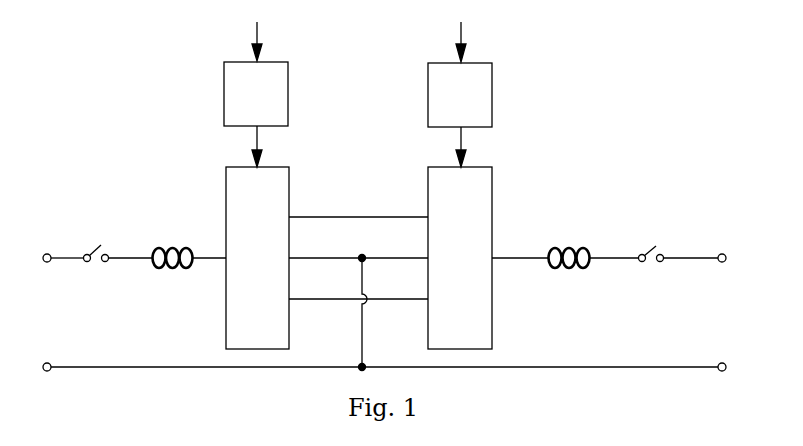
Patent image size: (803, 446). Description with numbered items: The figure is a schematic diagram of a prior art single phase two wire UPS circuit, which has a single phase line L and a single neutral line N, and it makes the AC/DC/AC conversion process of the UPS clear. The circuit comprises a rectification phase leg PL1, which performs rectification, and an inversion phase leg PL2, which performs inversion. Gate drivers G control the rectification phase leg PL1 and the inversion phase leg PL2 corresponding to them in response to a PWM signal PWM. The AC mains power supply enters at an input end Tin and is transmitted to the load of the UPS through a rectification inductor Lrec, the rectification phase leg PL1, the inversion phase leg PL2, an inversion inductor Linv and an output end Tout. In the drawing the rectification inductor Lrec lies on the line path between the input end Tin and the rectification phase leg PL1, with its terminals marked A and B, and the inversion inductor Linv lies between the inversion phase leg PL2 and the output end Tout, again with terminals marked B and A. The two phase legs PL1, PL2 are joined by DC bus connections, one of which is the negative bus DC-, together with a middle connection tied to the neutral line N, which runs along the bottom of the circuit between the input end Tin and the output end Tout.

The rectification phase leg PL1 is at (257, 258).
The inversion phase leg PL2 is at (460, 258).
The gate driver G is at (358, 114).
The PWM signal PWM is at (378, 36).
The negative DC bus DC- is at (358, 310).
The neutral line N is at (384, 305).
The input end Tin is at (97, 286).
The output end Tout is at (658, 282).
The line L is at (387, 240).
The inductor node A is at (372, 239).
The inductor node B is at (370, 239).
The rectification inductor Lrec is at (190, 274).
The inversion inductor Linv is at (541, 274).